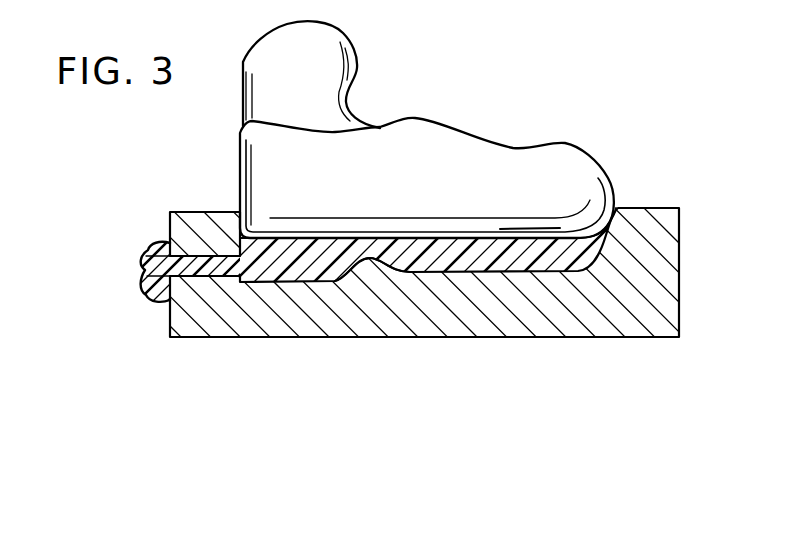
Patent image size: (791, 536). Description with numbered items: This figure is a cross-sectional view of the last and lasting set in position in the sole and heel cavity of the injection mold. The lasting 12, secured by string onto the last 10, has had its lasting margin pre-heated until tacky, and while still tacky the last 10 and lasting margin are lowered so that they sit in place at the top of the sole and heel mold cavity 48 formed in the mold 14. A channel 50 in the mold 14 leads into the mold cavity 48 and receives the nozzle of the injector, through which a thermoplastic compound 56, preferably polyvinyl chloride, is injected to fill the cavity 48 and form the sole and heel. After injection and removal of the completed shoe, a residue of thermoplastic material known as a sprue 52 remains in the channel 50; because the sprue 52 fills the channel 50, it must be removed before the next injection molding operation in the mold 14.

The last 10 is at (320, 60).
The lasting 12 is at (418, 152).
The mold 14 is at (602, 324).
The sole and heel mold cavity 48 is at (460, 264).
The channel 50 is at (194, 252).
The sprue 52 is at (146, 289).
The thermoplastic compound 56 is at (297, 270).